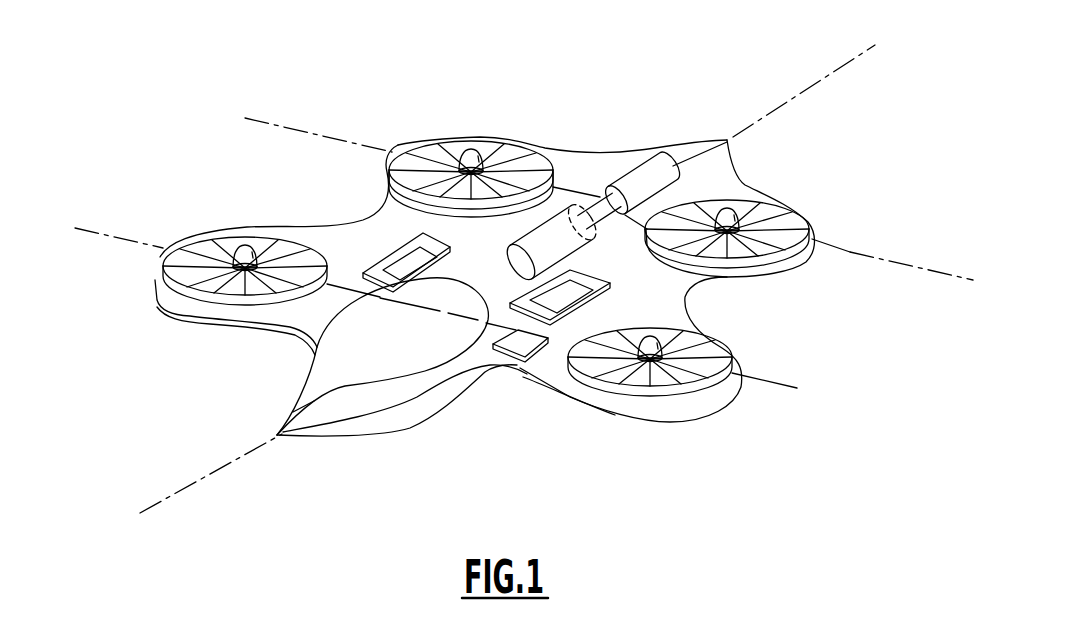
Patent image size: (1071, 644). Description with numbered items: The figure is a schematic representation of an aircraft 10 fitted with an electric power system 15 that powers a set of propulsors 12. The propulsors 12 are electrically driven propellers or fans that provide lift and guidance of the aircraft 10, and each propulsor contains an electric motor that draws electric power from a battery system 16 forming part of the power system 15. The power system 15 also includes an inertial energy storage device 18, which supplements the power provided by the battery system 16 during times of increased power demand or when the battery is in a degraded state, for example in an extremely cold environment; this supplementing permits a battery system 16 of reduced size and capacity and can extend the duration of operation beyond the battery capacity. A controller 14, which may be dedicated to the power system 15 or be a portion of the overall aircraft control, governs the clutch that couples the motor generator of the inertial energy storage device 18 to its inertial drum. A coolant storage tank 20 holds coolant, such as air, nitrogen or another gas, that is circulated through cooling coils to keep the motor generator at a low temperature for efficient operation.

The aircraft 10 is at (340, 437).
The propulsors 12 is at (770, 277).
The controller 14 is at (504, 364).
The electric power system 15 is at (588, 164).
The battery system 16 is at (395, 245).
The inertial energy storage device 18 is at (540, 227).
The coolant storage tank 20 is at (668, 148).